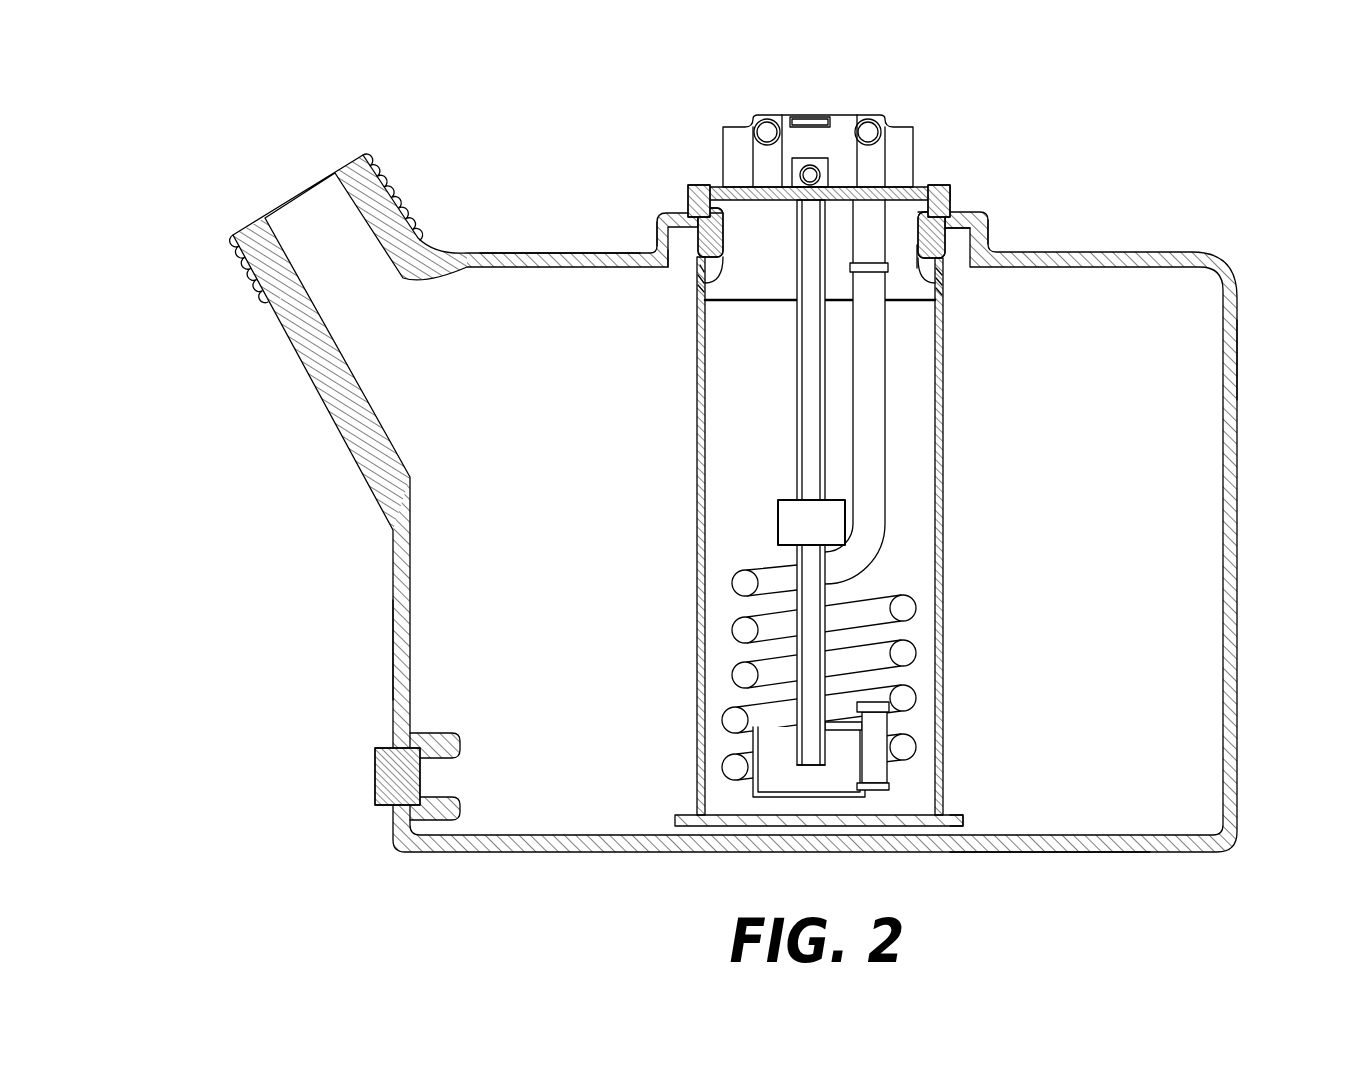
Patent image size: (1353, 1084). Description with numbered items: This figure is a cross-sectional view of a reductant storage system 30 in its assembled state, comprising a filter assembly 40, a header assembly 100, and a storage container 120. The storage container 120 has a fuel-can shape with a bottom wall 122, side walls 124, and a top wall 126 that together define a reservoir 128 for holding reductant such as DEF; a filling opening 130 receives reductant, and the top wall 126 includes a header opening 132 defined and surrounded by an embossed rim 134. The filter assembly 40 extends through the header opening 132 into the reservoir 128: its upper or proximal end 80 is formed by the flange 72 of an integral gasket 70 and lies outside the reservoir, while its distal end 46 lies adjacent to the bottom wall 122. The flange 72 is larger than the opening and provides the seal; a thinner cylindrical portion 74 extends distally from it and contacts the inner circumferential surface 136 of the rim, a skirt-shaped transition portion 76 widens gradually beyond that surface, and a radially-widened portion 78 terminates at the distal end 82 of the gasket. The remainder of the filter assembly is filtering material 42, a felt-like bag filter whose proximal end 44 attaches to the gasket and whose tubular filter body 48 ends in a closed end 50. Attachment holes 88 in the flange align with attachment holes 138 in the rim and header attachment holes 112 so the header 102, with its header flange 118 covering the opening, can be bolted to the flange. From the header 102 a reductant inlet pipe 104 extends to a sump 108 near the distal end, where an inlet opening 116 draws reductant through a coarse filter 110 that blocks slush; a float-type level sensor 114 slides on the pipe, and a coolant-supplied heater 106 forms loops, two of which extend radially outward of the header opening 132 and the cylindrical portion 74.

The reductant storage system 30 is at (215, 175).
The filter assembly 40 is at (801, 571).
The filtering material 42 is at (697, 380).
The proximal end of filtering material 44 is at (696, 275).
The distal end of filter assembly 46 is at (697, 830).
The tubular filter body 48 is at (943, 497).
The closed end 50 is at (950, 817).
The gasket 70 is at (700, 222).
The flange 72 is at (950, 230).
The cylindrical portion 74 is at (707, 213).
The transition portion 76 is at (724, 264).
The radially-widened portion 78 is at (942, 278).
The proximal end of filter assembly 80 is at (702, 213).
The distal end of gasket 82 is at (765, 303).
The attachment holes 88 is at (935, 215).
The header assembly 100 is at (814, 129).
The header 102 is at (730, 145).
The reductant inlet pipe 104 is at (790, 486).
The heater 106 is at (881, 337).
The sump 108 is at (755, 775).
The coarse filter 110 is at (887, 727).
The header attachment holes 112 is at (718, 205).
The level sensor 114 is at (778, 532).
The inlet opening 116 is at (797, 770).
The header flange 118 is at (935, 190).
The storage container 120 is at (1240, 360).
The bottom wall 122 is at (1043, 845).
The side walls 124 is at (768, 536).
The top wall 126 is at (484, 255).
The reservoir 128 is at (1157, 627).
The filling opening 130 is at (298, 210).
The header opening 132 is at (890, 247).
The rim 134 is at (930, 242).
The inner circumferential surface 136 is at (920, 240).
The attachment holes 138 is at (935, 218).